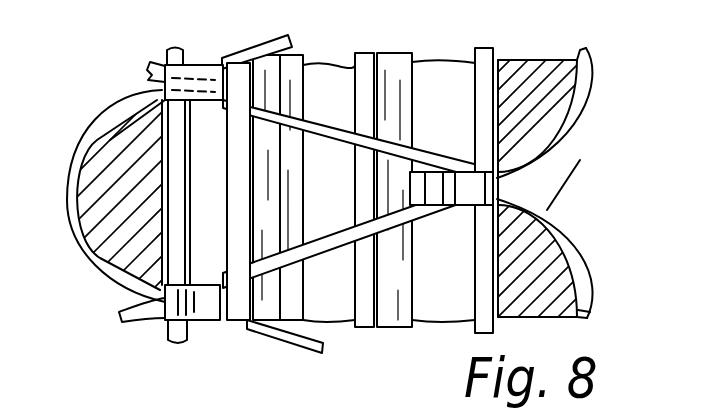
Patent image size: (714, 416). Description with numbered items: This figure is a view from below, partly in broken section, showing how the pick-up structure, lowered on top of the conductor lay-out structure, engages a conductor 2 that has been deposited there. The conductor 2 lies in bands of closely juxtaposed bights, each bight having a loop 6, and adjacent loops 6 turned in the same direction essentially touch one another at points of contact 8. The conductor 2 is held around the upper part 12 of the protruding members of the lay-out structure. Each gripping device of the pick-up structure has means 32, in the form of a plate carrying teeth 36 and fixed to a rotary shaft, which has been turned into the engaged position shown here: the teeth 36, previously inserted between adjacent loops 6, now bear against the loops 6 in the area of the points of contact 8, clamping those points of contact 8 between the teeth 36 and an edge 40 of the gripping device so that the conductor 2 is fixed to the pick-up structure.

The conductor 2 is at (125, 311).
The loop 6 is at (67, 203).
The point of contact 8 is at (190, 62).
The upper part 12 is at (98, 170).
The means 32 is at (262, 312).
The teeth 36 is at (232, 62).
The edge 40 is at (176, 50).